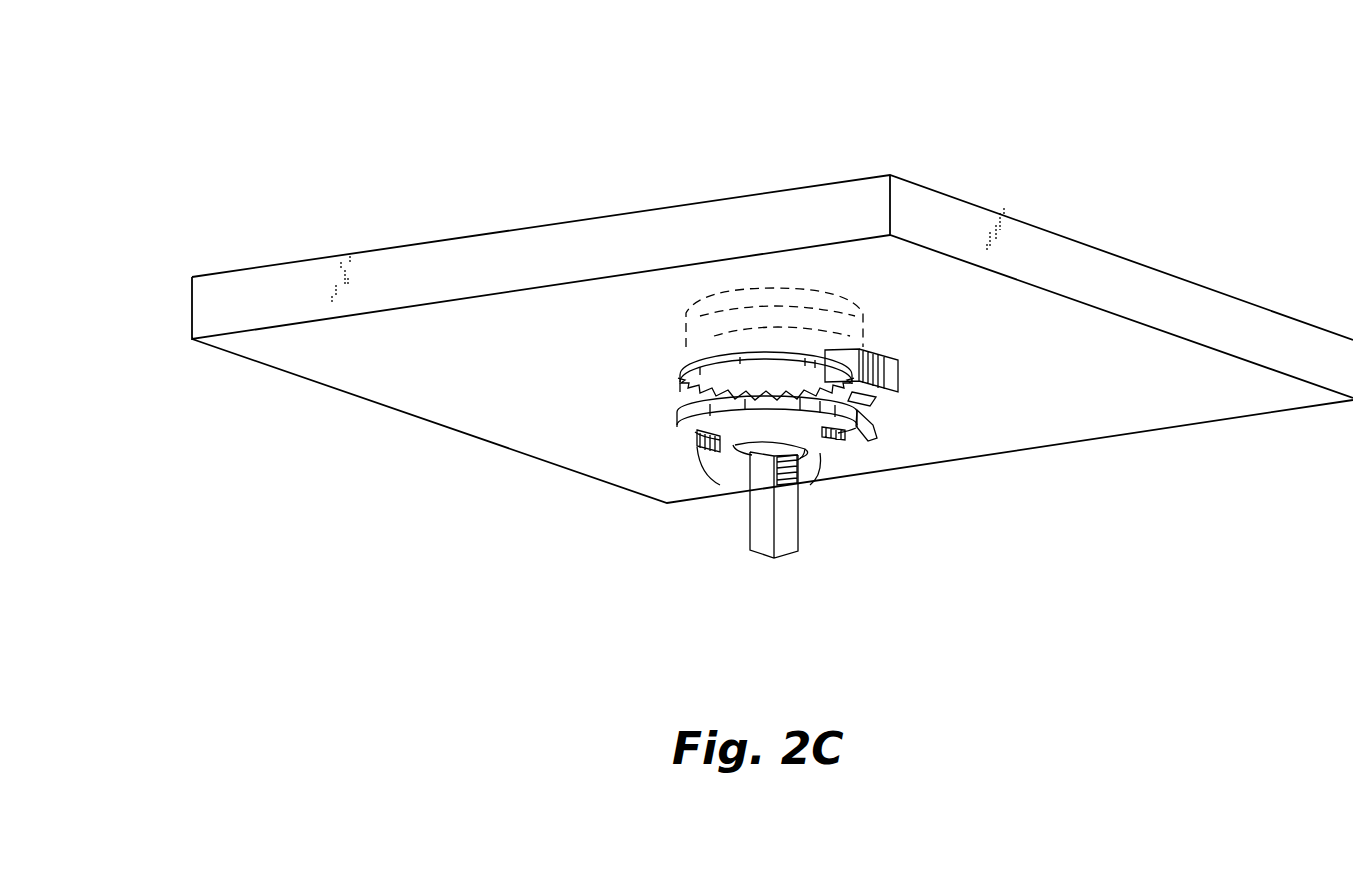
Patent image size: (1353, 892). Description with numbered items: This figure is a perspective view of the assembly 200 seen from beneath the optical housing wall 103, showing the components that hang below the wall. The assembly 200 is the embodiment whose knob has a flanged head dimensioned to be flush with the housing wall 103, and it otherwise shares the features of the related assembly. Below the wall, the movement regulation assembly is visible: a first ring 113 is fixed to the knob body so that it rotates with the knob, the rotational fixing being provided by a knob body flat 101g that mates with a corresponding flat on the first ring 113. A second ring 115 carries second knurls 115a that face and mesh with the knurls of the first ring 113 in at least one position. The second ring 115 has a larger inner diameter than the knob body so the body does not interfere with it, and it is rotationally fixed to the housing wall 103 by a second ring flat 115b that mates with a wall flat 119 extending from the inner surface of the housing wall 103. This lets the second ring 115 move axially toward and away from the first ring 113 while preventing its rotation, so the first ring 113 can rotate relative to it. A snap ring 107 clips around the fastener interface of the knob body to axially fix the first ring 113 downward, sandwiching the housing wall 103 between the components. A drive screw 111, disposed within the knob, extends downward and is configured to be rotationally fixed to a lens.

The assembly 200 is at (430, 103).
The housing wall 103 is at (952, 218).
The second ring 115 is at (678, 382).
The second knurls 115a is at (690, 398).
The second ring flat 115b is at (818, 368).
The wall flat 119 is at (890, 370).
The first ring 113 is at (878, 396).
The snap ring 107 is at (698, 452).
The knob body flat 101g is at (803, 465).
The drive screw 111 is at (799, 530).